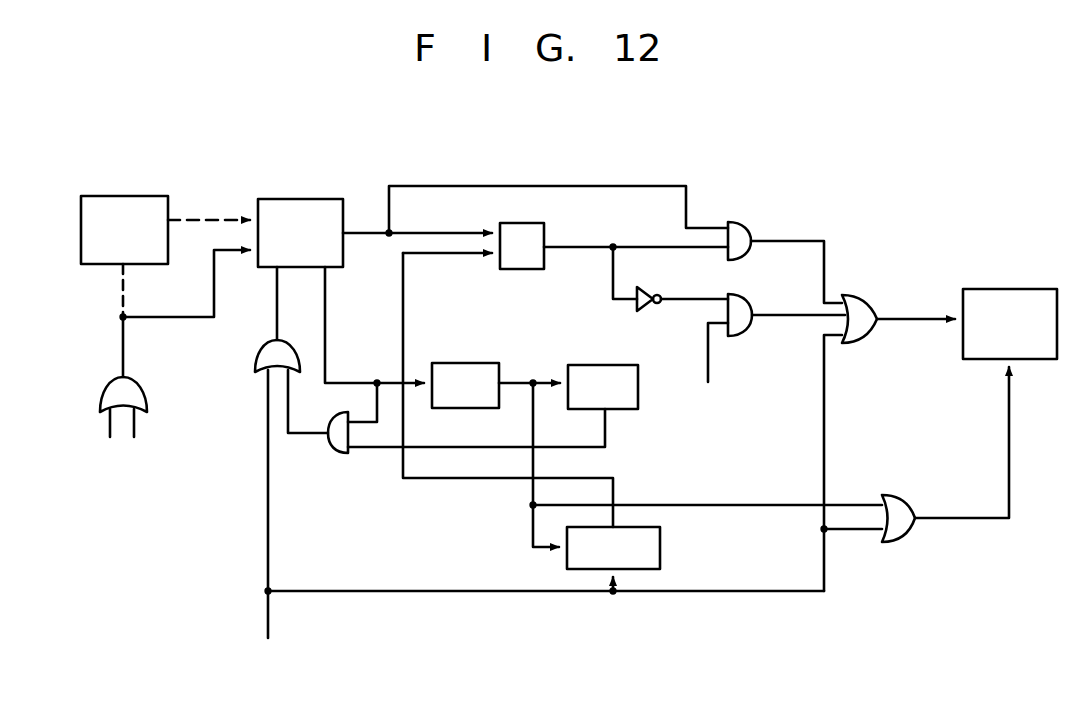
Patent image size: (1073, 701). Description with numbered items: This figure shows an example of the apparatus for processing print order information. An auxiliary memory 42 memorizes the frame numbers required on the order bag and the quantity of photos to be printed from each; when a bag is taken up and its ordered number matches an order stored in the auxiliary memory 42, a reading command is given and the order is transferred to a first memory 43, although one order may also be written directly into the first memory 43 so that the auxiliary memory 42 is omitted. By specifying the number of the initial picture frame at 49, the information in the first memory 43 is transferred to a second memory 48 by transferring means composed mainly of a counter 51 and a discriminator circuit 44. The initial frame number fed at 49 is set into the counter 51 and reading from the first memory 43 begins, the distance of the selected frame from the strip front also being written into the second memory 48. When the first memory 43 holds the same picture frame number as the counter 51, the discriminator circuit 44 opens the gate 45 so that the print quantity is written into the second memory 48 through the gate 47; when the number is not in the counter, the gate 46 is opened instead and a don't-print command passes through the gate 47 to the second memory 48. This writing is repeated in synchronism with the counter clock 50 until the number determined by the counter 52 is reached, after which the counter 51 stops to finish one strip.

The auxiliary memory 42 is at (132, 196).
The first memory 43 is at (317, 198).
The discriminator circuit 44 is at (538, 283).
The gate 45 is at (741, 221).
The gate 46 is at (752, 304).
The gate 47 is at (865, 296).
The second memory 48 is at (1018, 289).
The initial frame number input 49 is at (270, 624).
The counter clock 50 is at (462, 362).
The counter 51 is at (661, 556).
The counter 52 is at (593, 375).